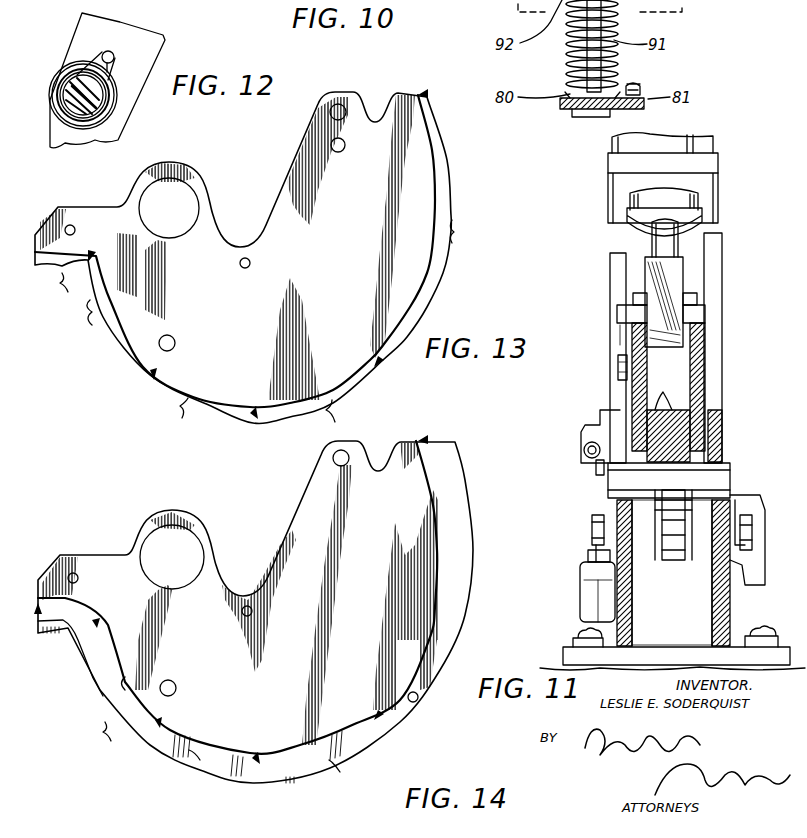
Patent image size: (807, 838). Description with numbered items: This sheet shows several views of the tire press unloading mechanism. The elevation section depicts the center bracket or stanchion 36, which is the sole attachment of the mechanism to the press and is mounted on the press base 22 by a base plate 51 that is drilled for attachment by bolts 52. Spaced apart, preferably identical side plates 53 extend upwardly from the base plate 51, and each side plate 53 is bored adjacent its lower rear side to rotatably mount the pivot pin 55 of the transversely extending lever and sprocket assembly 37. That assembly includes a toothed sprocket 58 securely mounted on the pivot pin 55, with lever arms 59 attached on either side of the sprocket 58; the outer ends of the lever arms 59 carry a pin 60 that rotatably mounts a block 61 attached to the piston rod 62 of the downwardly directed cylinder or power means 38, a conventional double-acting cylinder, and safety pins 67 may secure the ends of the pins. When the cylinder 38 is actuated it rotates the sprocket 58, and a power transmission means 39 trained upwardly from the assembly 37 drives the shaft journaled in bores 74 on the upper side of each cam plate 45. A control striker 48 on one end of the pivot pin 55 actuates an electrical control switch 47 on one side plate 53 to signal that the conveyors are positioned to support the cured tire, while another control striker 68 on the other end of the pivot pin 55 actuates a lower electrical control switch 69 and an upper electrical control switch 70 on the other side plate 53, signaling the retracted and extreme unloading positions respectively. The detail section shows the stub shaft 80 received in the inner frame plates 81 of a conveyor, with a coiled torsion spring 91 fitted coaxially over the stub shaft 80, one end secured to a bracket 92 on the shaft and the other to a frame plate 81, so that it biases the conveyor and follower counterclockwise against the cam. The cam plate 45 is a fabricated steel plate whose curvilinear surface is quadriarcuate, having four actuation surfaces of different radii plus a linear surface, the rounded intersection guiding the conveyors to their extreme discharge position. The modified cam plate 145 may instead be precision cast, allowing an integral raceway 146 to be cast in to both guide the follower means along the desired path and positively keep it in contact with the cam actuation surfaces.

In FIG. 11, the base 22 is at (560, 665).
In FIG. 11, the center bracket or stanchion 36 is at (725, 385).
In FIG. 11, the lever and sprocket assembly 37 is at (728, 435).
In FIG. 11, the cylinder or power means 38 is at (695, 148).
In FIG. 11, the power transmission means 39 is at (671, 565).
In FIG. 13, the cam plate 45 is at (280, 175).
In FIG. 11, the electrical control switch 47 is at (757, 510).
In FIG. 11, the control striker 48 is at (755, 535).
In FIG. 11, the base plate 51 is at (630, 655).
In FIG. 11, the bolts 52 is at (758, 633).
In FIG. 11, the side plates 53 is at (712, 275).
In FIG. 11, the pivot pin 55 is at (625, 483).
In FIG. 11, the toothed sprocket 58 is at (660, 438).
In FIG. 11, the lever arms 59 is at (636, 390).
In FIG. 11, the pin 60 is at (635, 313).
In FIG. 11, the block 61 is at (672, 265).
In FIG. 11, the piston rod 62 is at (660, 245).
In FIG. 11, the safety pins 67 is at (615, 358).
In FIG. 11, the control striker 68 is at (592, 528).
In FIG. 11, the lower electrical control switch 69 is at (583, 596).
In FIG. 11, the upper electrical control switch 70 is at (585, 452).
In FIG. 13, the bores 74 is at (186, 185).
In FIG. 12, the stub shaft 80 is at (88, 100).
In FIG. 12, the inner frame plates 81 is at (148, 58).
In FIG. 12, the coiled torsion spring 91 is at (110, 120).
In FIG. 12, the bracket 92 is at (114, 55).
In FIG. 14, the cam plate 145 is at (278, 528).
In FIG. 14, the integral raceway 146 is at (418, 700).